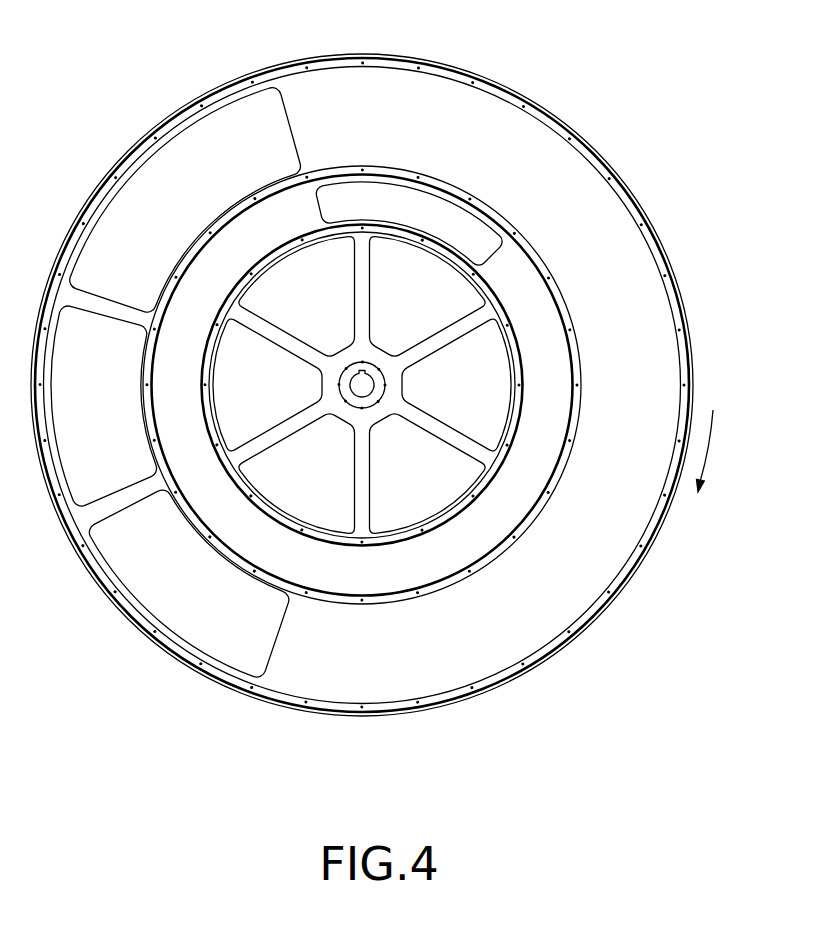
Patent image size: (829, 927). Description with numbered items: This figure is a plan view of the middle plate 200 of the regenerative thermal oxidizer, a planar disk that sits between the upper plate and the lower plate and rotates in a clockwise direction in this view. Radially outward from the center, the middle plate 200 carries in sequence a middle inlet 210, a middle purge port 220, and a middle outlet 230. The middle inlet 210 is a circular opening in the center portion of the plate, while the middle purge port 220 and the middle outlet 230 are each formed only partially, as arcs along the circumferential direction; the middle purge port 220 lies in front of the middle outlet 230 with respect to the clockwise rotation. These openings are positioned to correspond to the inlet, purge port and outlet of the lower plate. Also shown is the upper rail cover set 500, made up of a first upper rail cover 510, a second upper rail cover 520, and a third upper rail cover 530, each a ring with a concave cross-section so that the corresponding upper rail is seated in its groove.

The middle plate 200 is at (377, 410).
The middle inlet 210 is at (487, 370).
The middle purge port 220 is at (405, 202).
The middle outlet 230 is at (195, 155).
The upper rail cover set 500 is at (362, 430).
The first upper rail cover 510 is at (384, 548).
The second upper rail cover 520 is at (455, 582).
The third upper rail cover 530 is at (552, 658).